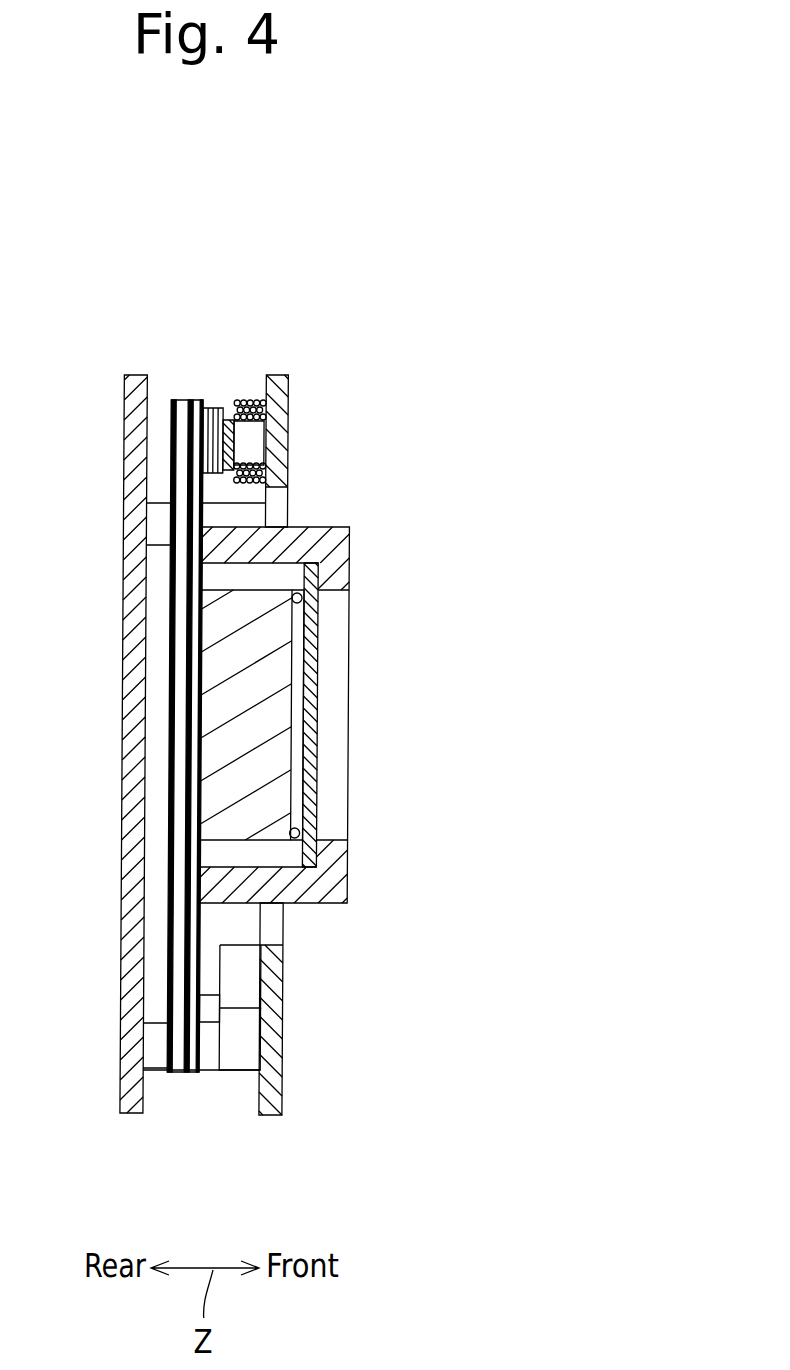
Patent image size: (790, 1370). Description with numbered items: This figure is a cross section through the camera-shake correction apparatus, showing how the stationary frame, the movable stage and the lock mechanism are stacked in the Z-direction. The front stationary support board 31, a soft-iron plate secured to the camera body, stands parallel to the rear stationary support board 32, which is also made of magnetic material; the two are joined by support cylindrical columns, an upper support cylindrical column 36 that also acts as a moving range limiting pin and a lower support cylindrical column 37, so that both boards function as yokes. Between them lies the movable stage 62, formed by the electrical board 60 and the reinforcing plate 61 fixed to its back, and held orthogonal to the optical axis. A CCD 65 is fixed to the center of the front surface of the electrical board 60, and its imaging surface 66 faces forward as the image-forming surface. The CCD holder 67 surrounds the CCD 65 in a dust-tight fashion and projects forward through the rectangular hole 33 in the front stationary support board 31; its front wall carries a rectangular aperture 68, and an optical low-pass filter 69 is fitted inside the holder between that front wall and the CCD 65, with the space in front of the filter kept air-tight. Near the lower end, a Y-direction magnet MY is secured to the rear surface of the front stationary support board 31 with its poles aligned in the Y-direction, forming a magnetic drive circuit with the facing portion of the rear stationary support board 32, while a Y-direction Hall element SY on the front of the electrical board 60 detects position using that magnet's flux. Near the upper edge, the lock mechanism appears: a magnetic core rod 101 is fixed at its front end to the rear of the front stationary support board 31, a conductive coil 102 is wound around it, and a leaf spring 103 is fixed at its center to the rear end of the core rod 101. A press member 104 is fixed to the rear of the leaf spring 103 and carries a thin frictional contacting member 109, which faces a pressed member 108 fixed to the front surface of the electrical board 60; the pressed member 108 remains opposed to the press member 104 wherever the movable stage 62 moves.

The front stationary support board 31 is at (287, 374).
The rear stationary support board 32 is at (128, 374).
The rectangular hole 33 is at (286, 930).
The upper support cylindrical column 36 is at (157, 503).
The lower support cylindrical column 37 is at (160, 1070).
The electrical board 60 is at (191, 400).
The reinforcing plate 61 is at (172, 400).
The movable stage 62 is at (175, 308).
The CCD 65 is at (280, 742).
The imaging surface 66 is at (300, 787).
The CCD holder 67 is at (347, 543).
The aperture 68 is at (335, 592).
The optical low-pass filter 69 is at (318, 692).
The core rod 101 is at (258, 447).
The coil 102 is at (250, 412).
The leaf spring 103 is at (246, 403).
The press member 104 is at (224, 406).
The pressed member 108 is at (207, 407).
The frictional contacting member 109 is at (213, 406).
The Y-direction Hall element SY is at (225, 985).
The Y-direction magnet MY is at (235, 1072).